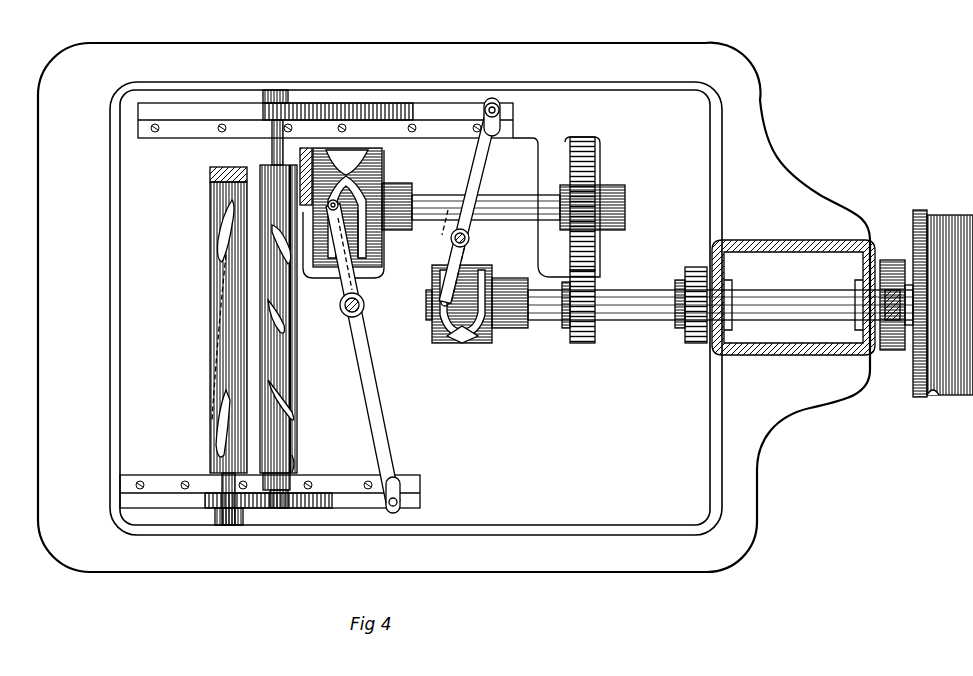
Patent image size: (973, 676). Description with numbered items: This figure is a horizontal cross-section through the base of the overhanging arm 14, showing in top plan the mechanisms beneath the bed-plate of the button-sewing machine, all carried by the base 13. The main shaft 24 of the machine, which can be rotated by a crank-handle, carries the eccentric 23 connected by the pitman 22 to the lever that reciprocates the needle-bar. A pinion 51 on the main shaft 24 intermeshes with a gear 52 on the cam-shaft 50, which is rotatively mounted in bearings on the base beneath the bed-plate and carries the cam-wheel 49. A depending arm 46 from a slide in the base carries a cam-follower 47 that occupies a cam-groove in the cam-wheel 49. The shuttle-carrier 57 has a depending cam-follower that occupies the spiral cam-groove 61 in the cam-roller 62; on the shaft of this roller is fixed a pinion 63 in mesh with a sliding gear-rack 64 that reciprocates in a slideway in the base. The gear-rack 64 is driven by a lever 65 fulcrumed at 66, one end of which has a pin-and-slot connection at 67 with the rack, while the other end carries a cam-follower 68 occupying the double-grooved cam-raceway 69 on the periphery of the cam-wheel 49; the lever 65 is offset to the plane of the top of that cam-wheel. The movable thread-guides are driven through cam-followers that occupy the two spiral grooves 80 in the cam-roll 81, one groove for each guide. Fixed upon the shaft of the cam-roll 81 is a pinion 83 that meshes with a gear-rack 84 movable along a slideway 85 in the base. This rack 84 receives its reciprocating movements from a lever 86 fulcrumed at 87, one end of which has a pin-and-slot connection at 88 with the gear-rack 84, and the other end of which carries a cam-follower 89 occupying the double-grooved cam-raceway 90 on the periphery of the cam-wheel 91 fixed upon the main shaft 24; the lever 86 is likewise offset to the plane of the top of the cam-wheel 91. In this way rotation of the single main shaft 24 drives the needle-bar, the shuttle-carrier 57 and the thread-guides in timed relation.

The base 13 is at (622, 88).
The overhanging arm 14 is at (770, 246).
The pitman 22 is at (894, 350).
The eccentric 23 is at (886, 262).
The main shaft 24 is at (634, 318).
The depending arm 46 is at (300, 160).
The cam-follower 47 is at (272, 152).
The cam-wheel 49 is at (382, 172).
The cam-shaft 50 is at (508, 196).
The pinion 51 is at (586, 306).
The gear 52 is at (588, 176).
The shuttle-carrier 57 is at (695, 268).
The spiral cam-groove 61 is at (232, 226).
The cam-roller 62 is at (222, 346).
The pinion 63 is at (218, 510).
The gear-rack 64 is at (278, 508).
The lever 65 is at (374, 410).
The fulcrum 66 is at (346, 316).
The pin-and-slot connection 67 is at (419, 481).
The cam-follower 68 is at (412, 186).
The double-grooved cam-raceway 69 is at (365, 153).
The spiral grooves 80 is at (272, 312).
The cam-roll 81 is at (294, 464).
The pinion 83 is at (263, 95).
The gear-rack 84 is at (322, 104).
The slideway 85 is at (183, 112).
The lever 86 is at (498, 158).
The fulcrum 87 is at (470, 240).
The pin-and-slot connection 88 is at (493, 102).
The cam-follower 89 is at (428, 306).
The double-grooved cam-raceway 90 is at (480, 336).
The cam-wheel 91 is at (436, 326).